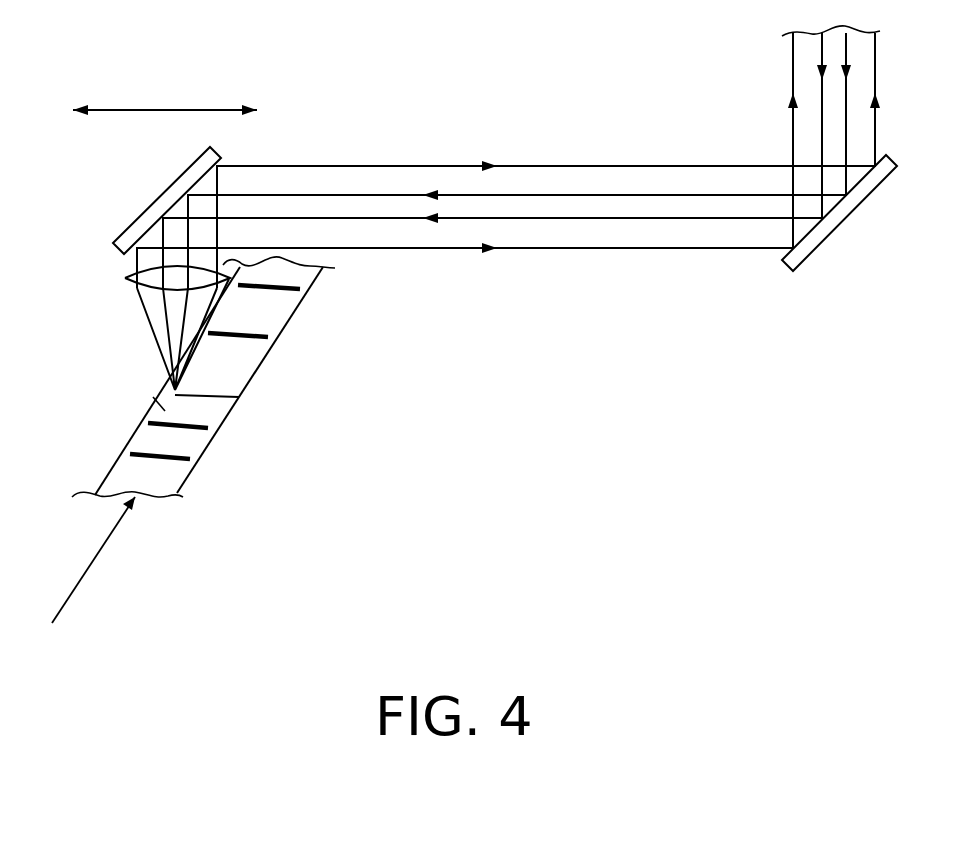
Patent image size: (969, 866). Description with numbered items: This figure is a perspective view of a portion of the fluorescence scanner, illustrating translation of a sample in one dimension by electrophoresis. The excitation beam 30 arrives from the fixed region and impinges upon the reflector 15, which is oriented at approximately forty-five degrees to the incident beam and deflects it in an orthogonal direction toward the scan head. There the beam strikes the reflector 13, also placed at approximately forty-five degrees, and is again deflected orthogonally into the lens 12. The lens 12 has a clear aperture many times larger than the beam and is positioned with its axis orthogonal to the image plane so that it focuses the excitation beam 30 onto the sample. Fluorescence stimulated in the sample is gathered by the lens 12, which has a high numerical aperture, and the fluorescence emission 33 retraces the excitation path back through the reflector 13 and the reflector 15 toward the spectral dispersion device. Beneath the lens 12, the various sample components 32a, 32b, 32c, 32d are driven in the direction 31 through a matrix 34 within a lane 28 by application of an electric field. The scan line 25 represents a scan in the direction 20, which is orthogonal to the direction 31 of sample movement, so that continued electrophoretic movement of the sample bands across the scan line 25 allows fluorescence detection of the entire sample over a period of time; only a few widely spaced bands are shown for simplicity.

The lens 12 is at (125, 278).
The reflector 13 is at (132, 223).
The reflector 15 is at (813, 252).
The scan direction 20 is at (165, 111).
The scan line 25 is at (210, 395).
The lane 28 is at (105, 471).
The excitation beam 30 is at (332, 194).
The direction of sample movement 31 is at (86, 568).
The sample component 32a is at (300, 289).
The sample component 32b is at (268, 337).
The sample component 32c is at (205, 426).
The sample component 32d is at (189, 459).
The fluorescence emission 33 is at (381, 166).
The matrix 34 is at (153, 397).